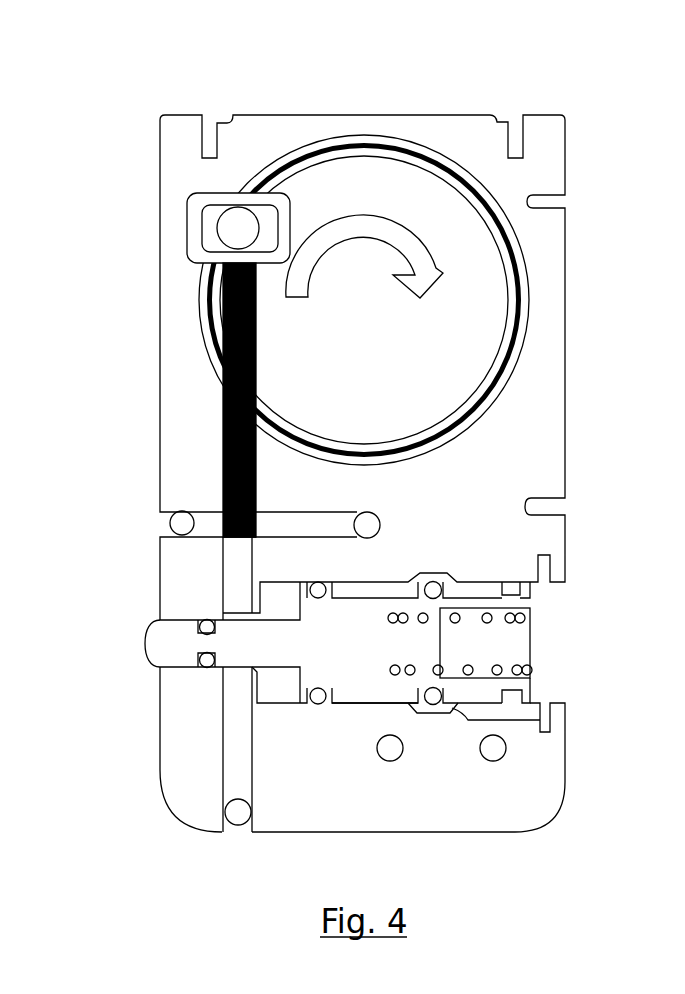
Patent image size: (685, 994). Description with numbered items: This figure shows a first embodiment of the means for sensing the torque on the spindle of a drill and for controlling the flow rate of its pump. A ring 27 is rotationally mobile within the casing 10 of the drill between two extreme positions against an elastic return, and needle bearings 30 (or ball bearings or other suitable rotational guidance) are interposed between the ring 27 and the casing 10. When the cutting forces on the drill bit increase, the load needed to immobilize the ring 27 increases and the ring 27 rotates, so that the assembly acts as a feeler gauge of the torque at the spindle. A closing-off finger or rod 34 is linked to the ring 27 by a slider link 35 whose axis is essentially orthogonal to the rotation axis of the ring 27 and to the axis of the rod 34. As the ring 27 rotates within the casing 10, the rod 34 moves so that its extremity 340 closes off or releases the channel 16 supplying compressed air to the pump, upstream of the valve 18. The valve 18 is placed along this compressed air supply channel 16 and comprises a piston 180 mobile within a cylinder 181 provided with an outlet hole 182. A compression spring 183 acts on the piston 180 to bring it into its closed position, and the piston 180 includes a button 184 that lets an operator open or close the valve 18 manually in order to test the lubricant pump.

The casing 10 is at (547, 232).
The needle bearings 30 is at (417, 143).
The ring 27 is at (522, 302).
The slider link 35 is at (215, 197).
The closing-off finger or rod 34 is at (222, 388).
The extremity 340 is at (223, 537).
The compressed air supply channel 16 is at (238, 582).
The button 184 is at (175, 647).
The valve 18 is at (422, 725).
The piston 180 is at (388, 653).
The cylinder 181 is at (363, 703).
The outlet hole 182 is at (445, 710).
The compression spring 183 is at (488, 617).